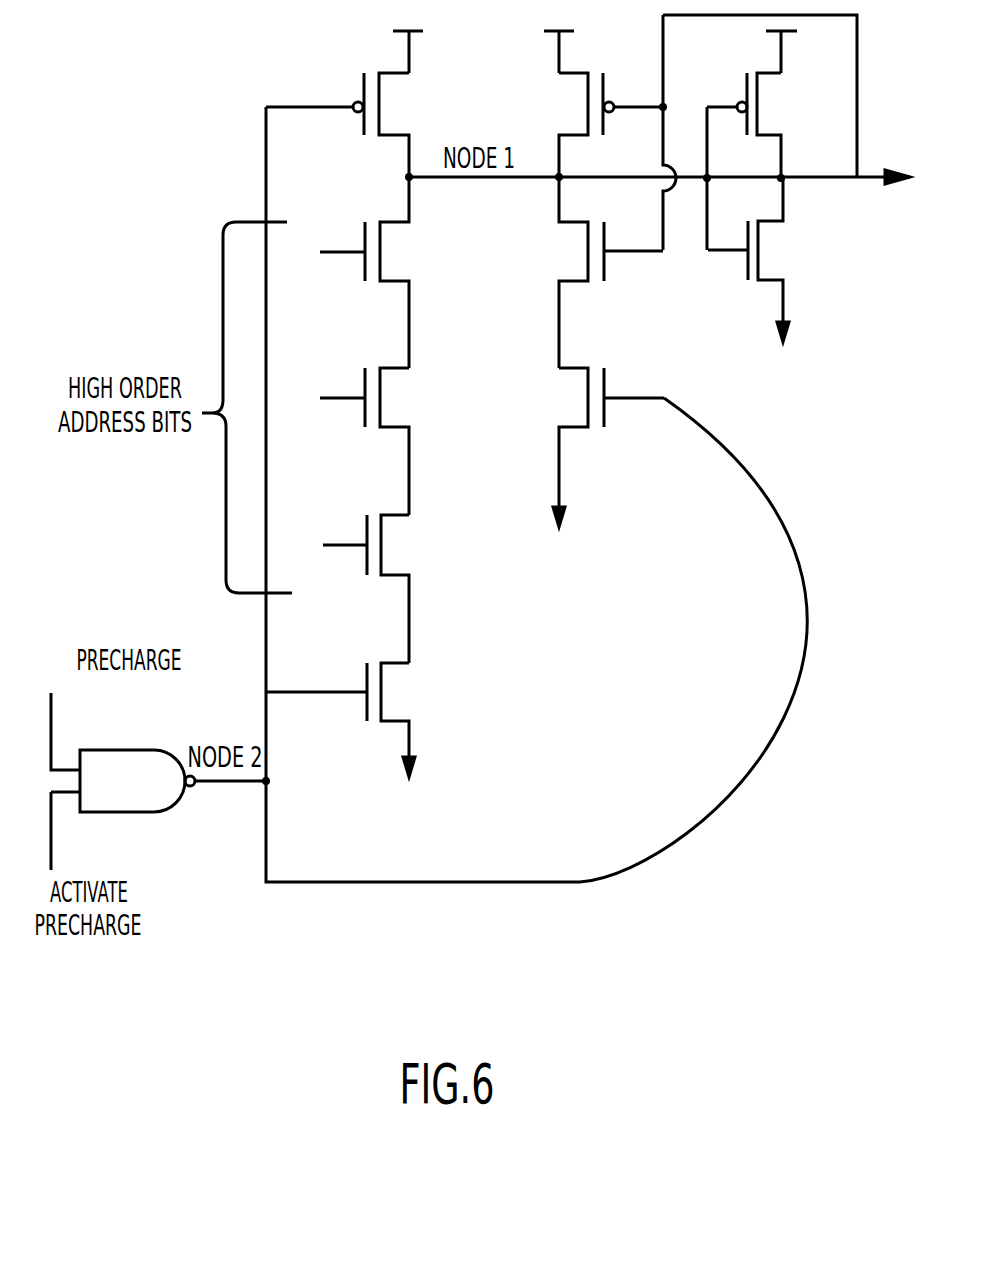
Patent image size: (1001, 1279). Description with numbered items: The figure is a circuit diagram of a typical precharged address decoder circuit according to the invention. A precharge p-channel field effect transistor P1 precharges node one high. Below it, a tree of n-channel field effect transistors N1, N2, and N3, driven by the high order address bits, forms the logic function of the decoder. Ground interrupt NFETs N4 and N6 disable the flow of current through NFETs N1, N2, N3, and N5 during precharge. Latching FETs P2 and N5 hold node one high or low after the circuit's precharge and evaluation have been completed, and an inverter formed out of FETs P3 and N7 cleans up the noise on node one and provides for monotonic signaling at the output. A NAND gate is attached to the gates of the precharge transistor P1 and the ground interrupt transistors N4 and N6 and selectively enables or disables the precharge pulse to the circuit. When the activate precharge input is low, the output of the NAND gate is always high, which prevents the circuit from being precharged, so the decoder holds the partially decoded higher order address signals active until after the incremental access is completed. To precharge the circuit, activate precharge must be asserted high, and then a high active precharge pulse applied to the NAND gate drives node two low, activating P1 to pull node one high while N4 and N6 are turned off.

The precharge p-channel field effect transistor P1 is at (350, 104).
The latching FET P2 is at (600, 104).
The inverter FET P3 is at (758, 104).
The n-channel field effect transistor N1 is at (374, 272).
The n-channel field effect transistor N2 is at (375, 441).
The n-channel field effect transistor N3 is at (379, 588).
The ground interrupt NFET N4 is at (356, 738).
The latching FET N5 is at (599, 272).
The ground interrupt NFET N6 is at (600, 467).
The inverter FET N7 is at (760, 277).